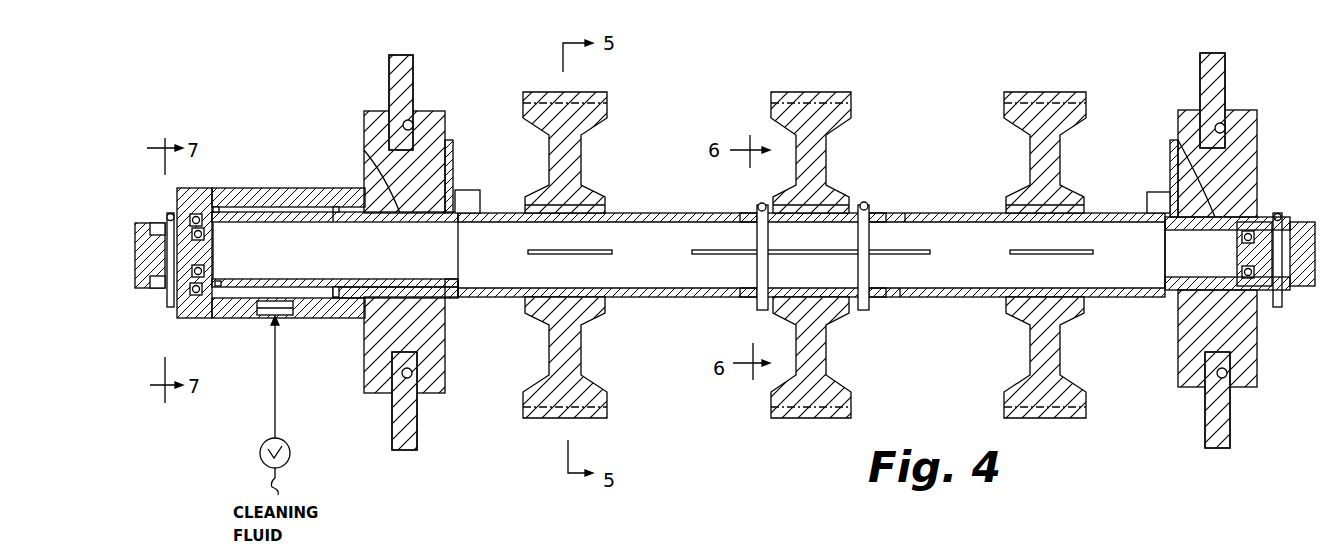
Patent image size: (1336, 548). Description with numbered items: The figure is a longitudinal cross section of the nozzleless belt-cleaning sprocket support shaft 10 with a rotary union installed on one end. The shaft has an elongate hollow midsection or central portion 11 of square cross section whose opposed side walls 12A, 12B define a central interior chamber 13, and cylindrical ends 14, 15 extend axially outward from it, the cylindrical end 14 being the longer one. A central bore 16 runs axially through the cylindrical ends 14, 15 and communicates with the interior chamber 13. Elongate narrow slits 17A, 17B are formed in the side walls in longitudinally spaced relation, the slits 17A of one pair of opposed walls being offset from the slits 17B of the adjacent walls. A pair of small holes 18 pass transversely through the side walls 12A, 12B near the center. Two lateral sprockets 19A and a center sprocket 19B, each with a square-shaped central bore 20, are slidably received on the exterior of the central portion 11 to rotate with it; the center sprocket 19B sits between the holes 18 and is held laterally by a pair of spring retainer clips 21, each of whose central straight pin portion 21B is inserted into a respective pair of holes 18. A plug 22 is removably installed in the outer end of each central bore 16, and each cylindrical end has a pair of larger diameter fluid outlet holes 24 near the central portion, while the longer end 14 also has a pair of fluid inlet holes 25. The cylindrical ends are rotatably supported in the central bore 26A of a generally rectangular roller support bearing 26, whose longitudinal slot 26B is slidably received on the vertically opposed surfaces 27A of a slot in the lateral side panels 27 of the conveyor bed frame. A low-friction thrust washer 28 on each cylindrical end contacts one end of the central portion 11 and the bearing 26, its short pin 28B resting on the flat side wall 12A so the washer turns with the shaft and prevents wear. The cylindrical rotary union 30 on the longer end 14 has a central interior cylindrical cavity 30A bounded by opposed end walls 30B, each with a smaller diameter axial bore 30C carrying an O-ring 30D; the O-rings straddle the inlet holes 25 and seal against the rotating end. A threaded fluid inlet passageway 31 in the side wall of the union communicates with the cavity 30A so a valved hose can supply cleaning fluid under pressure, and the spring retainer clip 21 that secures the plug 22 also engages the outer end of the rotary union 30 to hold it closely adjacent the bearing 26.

The nozzleless belt-cleaning sprocket support shaft 10 is at (672, 136).
The hollow midsection or central portion 11 is at (915, 162).
The side wall 12A is at (905, 213).
The side wall 12B is at (900, 298).
The central interior chamber 13 is at (657, 267).
The cylindrical end 14 is at (242, 212).
The cylindrical end 15 is at (1250, 206).
The central bore 16 is at (334, 267).
The slits 17A is at (645, 213).
The slits 17B is at (565, 254).
The small holes 18 is at (748, 220).
The lateral sprockets 19A is at (585, 357).
The center sprocket 19B is at (846, 371).
The square-shaped central bore 20 is at (553, 210).
The spring retainer clip 21 is at (169, 214).
The central straight pin portion 21B is at (175, 318).
The plug 22 is at (151, 290).
The fluid outlet holes 24 is at (406, 225).
The fluid inlet holes 25 is at (278, 281).
The roller support bearing 26 is at (364, 125).
The central bore 26A is at (364, 150).
The longitudinal slot 26B is at (413, 122).
The lateral side panels 27 is at (386, 433).
The vertically opposed surfaces 27A is at (389, 66).
The thrust washer 28 is at (452, 162).
The short pin 28B is at (470, 190).
The rotary union 30 is at (295, 188).
The central interior cylindrical cavity 30A is at (242, 318).
The opposed end walls 30B is at (216, 206).
The axial bore 30C is at (343, 299).
The O-ring 30D is at (349, 222).
The threaded fluid inlet passageway 31 is at (283, 318).